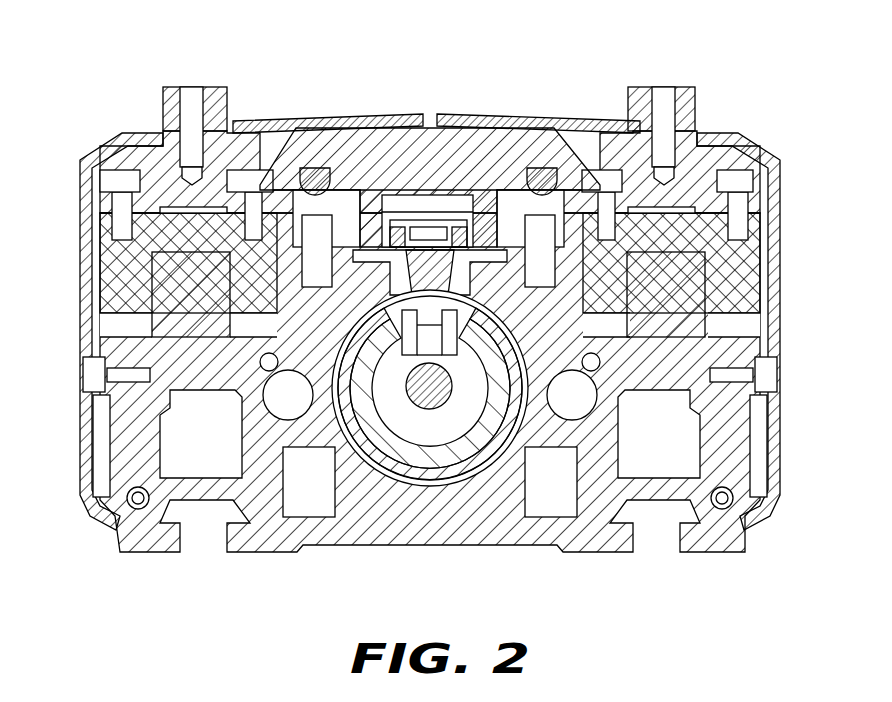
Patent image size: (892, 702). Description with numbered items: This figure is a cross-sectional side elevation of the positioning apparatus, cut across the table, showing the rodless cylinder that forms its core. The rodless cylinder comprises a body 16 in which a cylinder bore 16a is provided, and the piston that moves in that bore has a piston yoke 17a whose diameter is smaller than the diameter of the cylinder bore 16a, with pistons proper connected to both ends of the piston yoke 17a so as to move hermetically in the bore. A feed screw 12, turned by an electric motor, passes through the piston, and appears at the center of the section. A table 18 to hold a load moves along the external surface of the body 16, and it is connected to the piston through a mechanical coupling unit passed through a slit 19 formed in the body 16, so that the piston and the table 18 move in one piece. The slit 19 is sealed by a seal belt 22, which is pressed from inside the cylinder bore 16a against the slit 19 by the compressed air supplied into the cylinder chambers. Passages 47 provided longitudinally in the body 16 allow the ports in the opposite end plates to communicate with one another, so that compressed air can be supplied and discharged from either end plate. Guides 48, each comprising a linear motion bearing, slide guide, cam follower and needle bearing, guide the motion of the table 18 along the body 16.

The feed screw 12 is at (453, 397).
The body 16 is at (510, 545).
The cylinder bore 16a is at (412, 478).
The piston yoke 17a is at (466, 455).
The table 18 is at (412, 103).
The slit 19 is at (478, 135).
The seal belt 22 is at (392, 410).
The passages 47 is at (275, 415).
The guides 48 is at (165, 300).